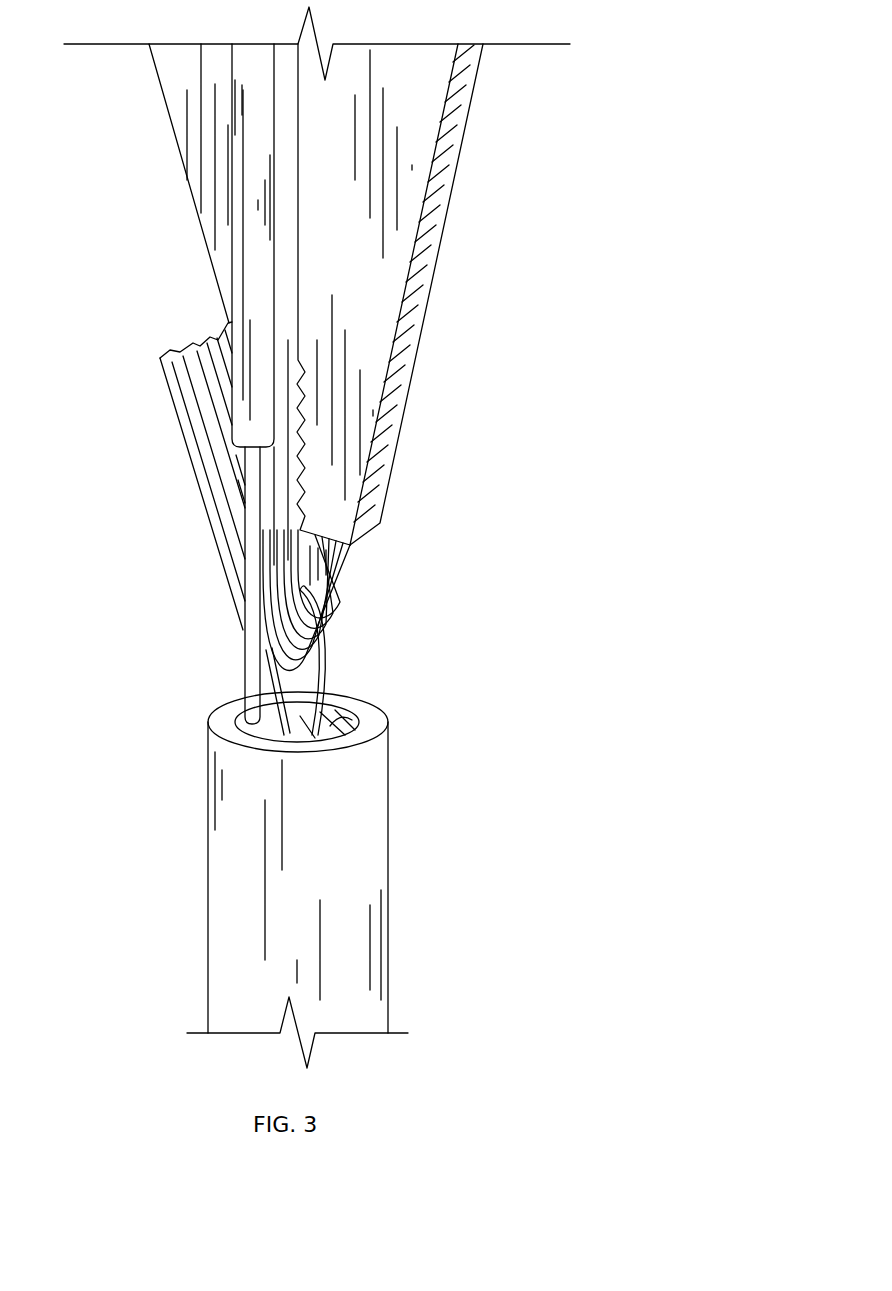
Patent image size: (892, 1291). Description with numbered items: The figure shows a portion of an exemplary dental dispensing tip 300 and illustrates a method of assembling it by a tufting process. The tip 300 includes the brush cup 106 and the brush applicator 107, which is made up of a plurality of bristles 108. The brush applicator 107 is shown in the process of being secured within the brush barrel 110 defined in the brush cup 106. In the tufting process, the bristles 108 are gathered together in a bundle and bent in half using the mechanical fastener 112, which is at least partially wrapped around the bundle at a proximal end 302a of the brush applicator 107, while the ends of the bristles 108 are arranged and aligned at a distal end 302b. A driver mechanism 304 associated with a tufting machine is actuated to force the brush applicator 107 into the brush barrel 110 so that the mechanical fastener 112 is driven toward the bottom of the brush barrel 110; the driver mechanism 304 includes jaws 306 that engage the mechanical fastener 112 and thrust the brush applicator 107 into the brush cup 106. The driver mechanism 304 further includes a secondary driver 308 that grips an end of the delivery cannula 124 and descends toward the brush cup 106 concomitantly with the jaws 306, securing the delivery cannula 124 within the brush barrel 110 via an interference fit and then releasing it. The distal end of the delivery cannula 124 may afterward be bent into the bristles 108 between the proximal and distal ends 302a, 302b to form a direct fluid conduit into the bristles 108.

The dental dispensing tip 300 is at (415, 799).
The driver mechanism 304 is at (472, 227).
The jaws 306 is at (288, 263).
The secondary driver 308 is at (240, 193).
The proximal end 302a is at (348, 635).
The distal end 302b is at (129, 466).
The brush applicator 107 is at (157, 375).
The bristles 108 is at (208, 470).
The delivery cannula 124 is at (250, 655).
The mechanical fastener 112 is at (330, 672).
The brush barrel 110 is at (343, 705).
The brush cup 106 is at (377, 890).